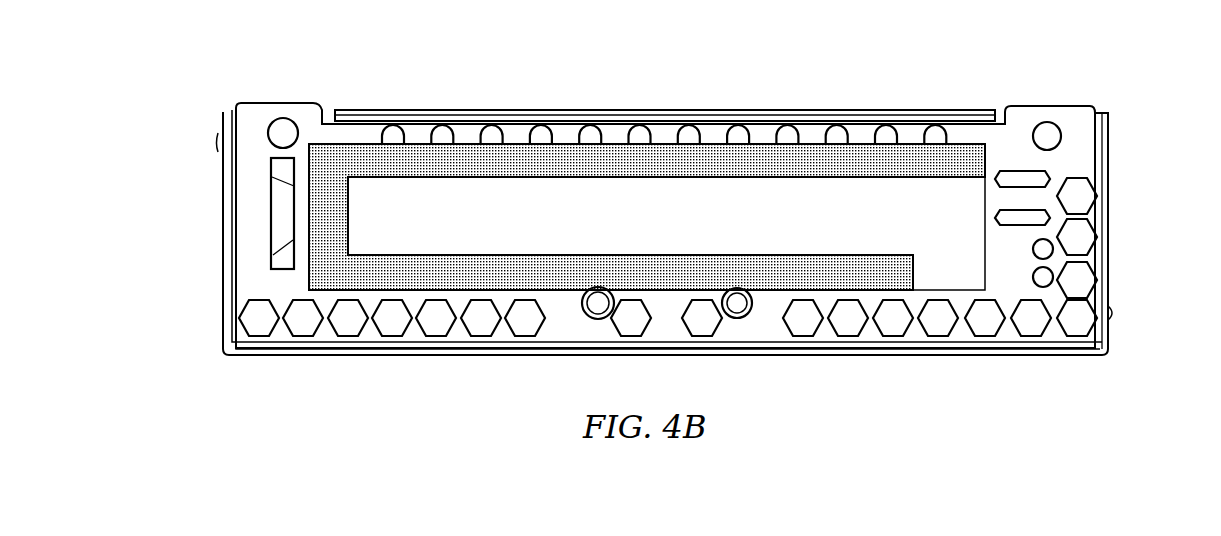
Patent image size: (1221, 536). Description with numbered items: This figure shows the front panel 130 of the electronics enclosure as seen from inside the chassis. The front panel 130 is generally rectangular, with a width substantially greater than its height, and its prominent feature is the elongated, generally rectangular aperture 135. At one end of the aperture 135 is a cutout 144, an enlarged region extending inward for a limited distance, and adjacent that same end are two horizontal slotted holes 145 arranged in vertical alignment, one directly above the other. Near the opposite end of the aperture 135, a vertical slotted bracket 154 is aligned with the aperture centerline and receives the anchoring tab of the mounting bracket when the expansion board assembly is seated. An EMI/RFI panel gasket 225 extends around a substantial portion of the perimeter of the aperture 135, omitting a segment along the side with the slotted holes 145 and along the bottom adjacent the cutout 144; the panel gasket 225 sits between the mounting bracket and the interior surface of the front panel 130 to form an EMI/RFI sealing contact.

The front panel 130 is at (224, 262).
The slotted bracket 154 is at (271, 165).
The elongated aperture 135 is at (550, 178).
The cutout 144 is at (950, 288).
The EMI/RFI panel gasket 225 is at (968, 145).
The slotted holes 145 is at (1047, 212).